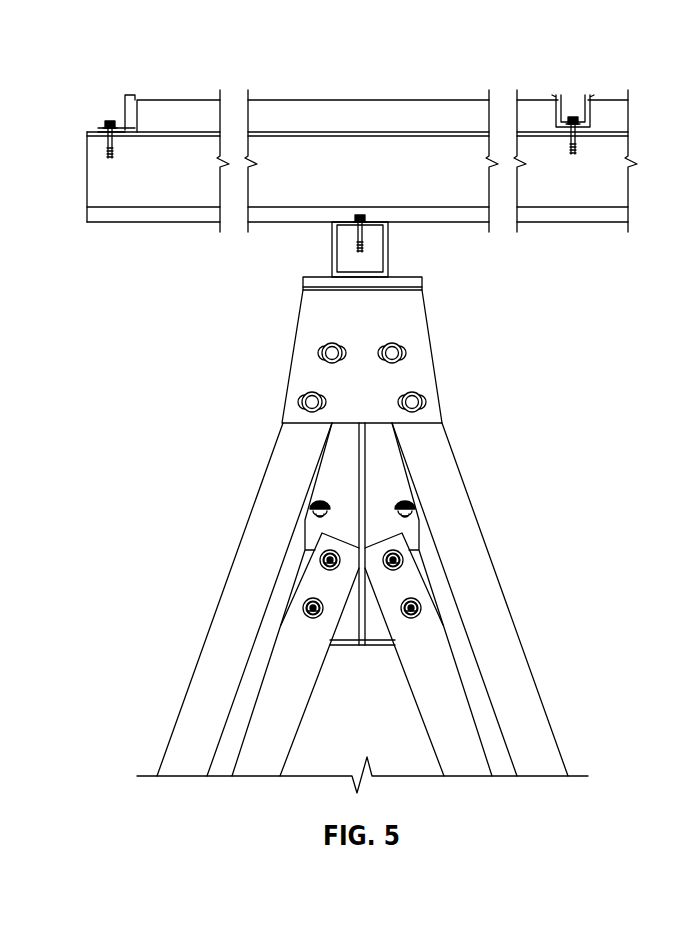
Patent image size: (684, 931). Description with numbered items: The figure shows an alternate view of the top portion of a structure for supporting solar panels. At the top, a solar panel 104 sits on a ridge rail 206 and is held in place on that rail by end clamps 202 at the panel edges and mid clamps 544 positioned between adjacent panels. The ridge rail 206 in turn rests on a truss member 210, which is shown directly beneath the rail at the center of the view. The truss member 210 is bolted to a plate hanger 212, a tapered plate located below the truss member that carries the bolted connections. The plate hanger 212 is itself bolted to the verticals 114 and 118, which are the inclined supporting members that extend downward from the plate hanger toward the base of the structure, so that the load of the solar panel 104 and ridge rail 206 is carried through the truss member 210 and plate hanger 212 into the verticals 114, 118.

The solar panel 104 is at (183, 98).
The end clamp 202 is at (125, 108).
The ridge rail 206 is at (87, 185).
The mid clamp 544 is at (558, 118).
The truss member 210 is at (332, 265).
The plate hanger 212 is at (357, 307).
The vertical 114 is at (263, 475).
The vertical 118 is at (320, 673).